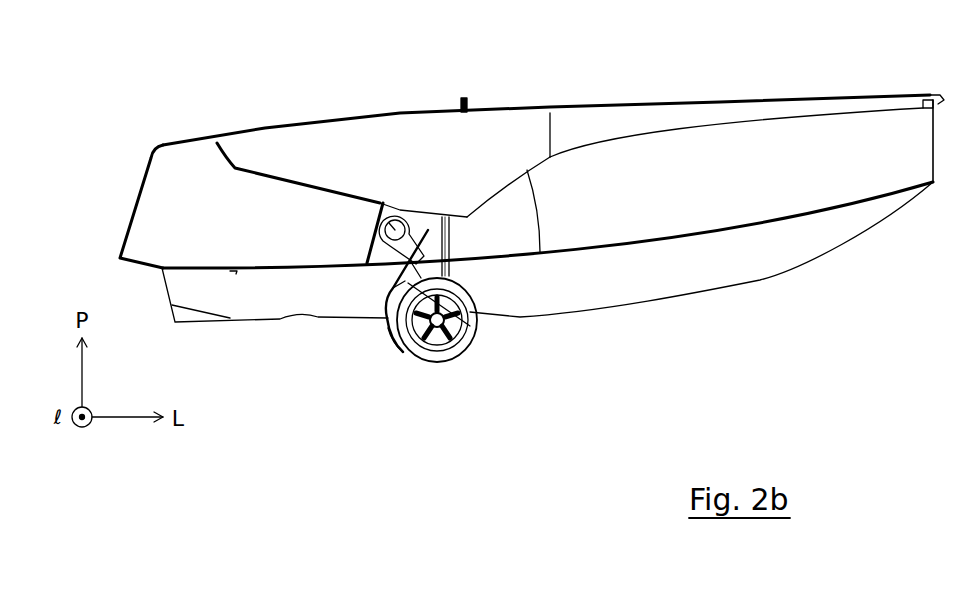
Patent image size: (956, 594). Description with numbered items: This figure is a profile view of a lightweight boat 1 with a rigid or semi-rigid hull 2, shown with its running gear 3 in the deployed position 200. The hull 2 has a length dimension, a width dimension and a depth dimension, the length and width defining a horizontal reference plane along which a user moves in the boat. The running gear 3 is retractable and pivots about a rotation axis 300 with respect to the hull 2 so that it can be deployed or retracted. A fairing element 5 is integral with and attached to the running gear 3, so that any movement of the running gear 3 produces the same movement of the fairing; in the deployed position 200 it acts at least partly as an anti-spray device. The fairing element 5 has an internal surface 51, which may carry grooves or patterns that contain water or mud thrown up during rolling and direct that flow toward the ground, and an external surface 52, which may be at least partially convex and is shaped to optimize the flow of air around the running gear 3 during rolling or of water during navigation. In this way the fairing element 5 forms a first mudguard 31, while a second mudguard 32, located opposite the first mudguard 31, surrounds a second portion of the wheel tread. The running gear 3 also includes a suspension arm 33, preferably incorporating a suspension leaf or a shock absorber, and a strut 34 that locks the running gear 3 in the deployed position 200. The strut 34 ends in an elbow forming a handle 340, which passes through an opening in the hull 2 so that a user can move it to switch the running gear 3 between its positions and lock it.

The boat 1 is at (118, 93).
The hull 2 is at (703, 100).
The running gear 3 is at (484, 376).
The fairing element 5 is at (395, 333).
The first mudguard 31 is at (400, 345).
The second mudguard 32 is at (458, 284).
The suspension arm 33 is at (385, 247).
The strut 34 is at (450, 250).
The internal surface 51 is at (470, 326).
The external surface 52 is at (405, 281).
The deployed position 200 is at (892, 389).
The rotation axis 300 is at (378, 206).
The handle 340 is at (462, 98).